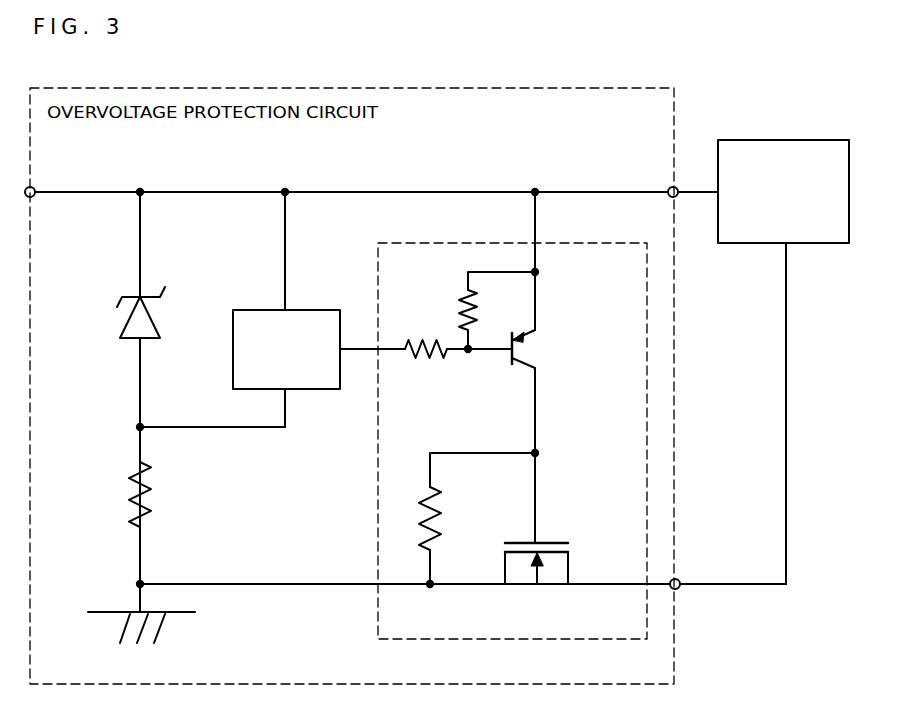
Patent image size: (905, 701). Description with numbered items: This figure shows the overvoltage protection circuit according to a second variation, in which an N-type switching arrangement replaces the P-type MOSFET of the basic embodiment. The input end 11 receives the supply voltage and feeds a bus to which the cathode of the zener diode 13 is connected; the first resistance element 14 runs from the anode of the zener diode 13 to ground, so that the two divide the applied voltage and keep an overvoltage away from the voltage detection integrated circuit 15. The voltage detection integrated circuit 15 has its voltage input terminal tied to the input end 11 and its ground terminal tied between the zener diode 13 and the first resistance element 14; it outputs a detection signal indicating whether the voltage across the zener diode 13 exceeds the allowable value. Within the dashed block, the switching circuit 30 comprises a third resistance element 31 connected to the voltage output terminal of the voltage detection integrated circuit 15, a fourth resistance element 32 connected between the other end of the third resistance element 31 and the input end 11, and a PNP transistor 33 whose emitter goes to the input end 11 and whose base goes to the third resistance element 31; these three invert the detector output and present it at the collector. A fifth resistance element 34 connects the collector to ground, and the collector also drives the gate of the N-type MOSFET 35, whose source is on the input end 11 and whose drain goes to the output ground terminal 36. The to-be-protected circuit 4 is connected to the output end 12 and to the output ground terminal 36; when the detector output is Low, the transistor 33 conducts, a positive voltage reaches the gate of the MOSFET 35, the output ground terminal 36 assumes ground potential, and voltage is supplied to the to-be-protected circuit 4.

The to-be-protected circuit 4 is at (772, 140).
The input end 11 is at (36, 188).
The output end 12 is at (669, 188).
The zener diode 13 is at (120, 340).
The first resistance element 14 is at (125, 500).
The voltage detection integrated circuit 15 is at (312, 310).
The switching circuit 30 is at (378, 497).
The third resistance element 31 is at (418, 340).
The fourth resistance element 32 is at (460, 298).
The transistor 33 is at (530, 360).
The fifth resistance element 34 is at (445, 512).
The MOSFET 35 is at (565, 541).
The output ground terminal 36 is at (680, 588).